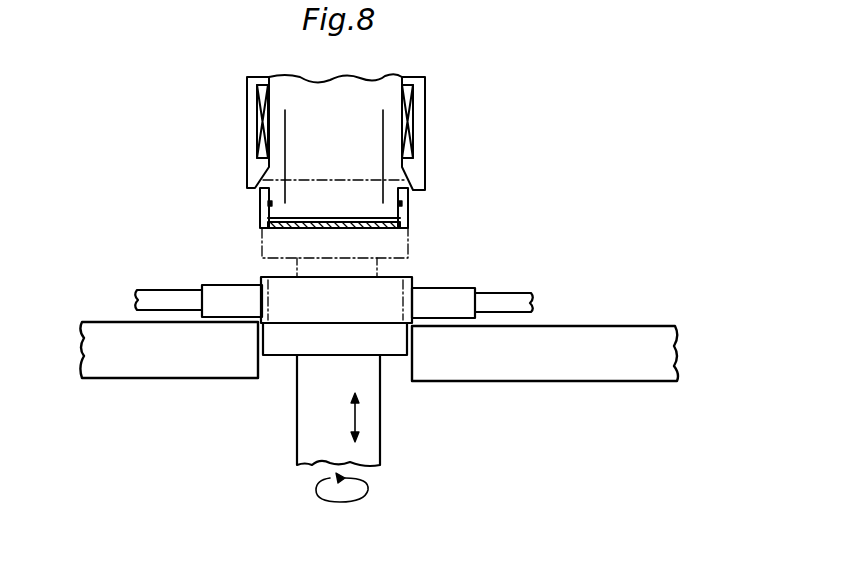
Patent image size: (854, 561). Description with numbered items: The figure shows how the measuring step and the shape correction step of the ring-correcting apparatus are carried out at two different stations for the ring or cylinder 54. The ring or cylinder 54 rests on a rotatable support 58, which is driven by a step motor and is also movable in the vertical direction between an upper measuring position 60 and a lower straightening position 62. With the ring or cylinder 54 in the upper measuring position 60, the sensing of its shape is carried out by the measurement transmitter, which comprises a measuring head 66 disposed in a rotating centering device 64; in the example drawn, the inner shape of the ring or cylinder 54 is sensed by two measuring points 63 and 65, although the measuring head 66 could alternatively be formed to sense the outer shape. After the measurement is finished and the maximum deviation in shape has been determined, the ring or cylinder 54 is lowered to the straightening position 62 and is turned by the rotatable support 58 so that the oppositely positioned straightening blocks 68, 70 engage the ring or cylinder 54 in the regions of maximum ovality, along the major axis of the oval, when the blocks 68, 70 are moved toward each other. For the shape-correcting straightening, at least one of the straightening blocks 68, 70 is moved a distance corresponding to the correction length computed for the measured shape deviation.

The ring or cylinder 54 is at (272, 213).
The rotatable support 58 is at (362, 347).
The upper measuring position 60 is at (398, 247).
The lower straightening position 62 is at (415, 287).
The measuring point 63 is at (274, 204).
The rotating centering device 64 is at (425, 123).
The measuring point 65 is at (394, 204).
The measuring head 66 is at (393, 216).
The straightening block 68 is at (455, 302).
The straightening block 70 is at (217, 293).